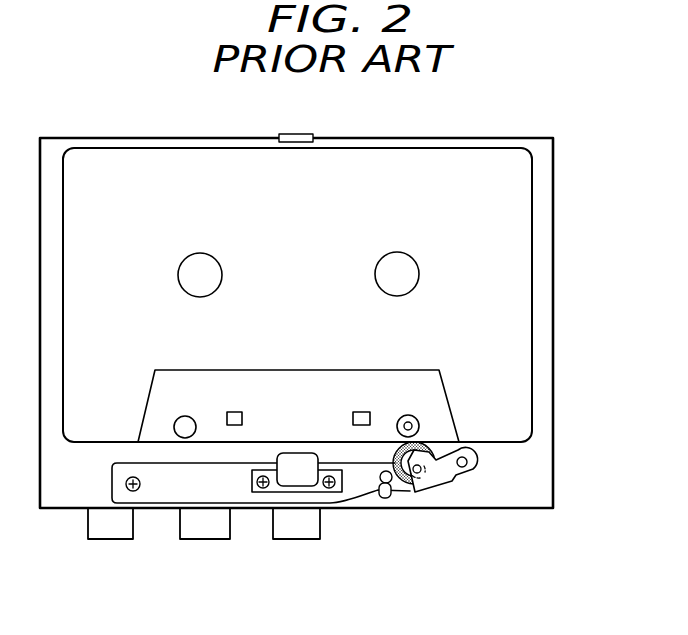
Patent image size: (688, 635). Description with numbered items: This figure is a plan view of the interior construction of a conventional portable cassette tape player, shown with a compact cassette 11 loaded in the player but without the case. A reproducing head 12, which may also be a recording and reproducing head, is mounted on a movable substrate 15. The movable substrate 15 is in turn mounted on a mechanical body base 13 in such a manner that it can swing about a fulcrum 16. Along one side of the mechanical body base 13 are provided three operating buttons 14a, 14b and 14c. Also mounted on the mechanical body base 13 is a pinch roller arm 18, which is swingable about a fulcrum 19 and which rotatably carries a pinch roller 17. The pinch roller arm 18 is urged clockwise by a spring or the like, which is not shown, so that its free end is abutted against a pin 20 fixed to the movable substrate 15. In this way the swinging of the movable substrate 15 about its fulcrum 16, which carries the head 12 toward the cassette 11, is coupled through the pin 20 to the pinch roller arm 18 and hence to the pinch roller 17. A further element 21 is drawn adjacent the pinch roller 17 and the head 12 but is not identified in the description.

The compact cassette 11 is at (527, 339).
The reproducing head 12 is at (297, 453).
The mechanical body base 13 is at (555, 453).
The operating button 14a is at (105, 537).
The operating button 14b is at (217, 535).
The operating button 14c is at (303, 533).
The movable substrate 15 is at (158, 498).
The fulcrum 16 is at (126, 484).
The pinch roller 17 is at (429, 447).
The pinch roller arm 18 is at (442, 478).
The fulcrum 19 is at (472, 462).
The pin 20 is at (390, 498).
The capstan 21 is at (412, 419).